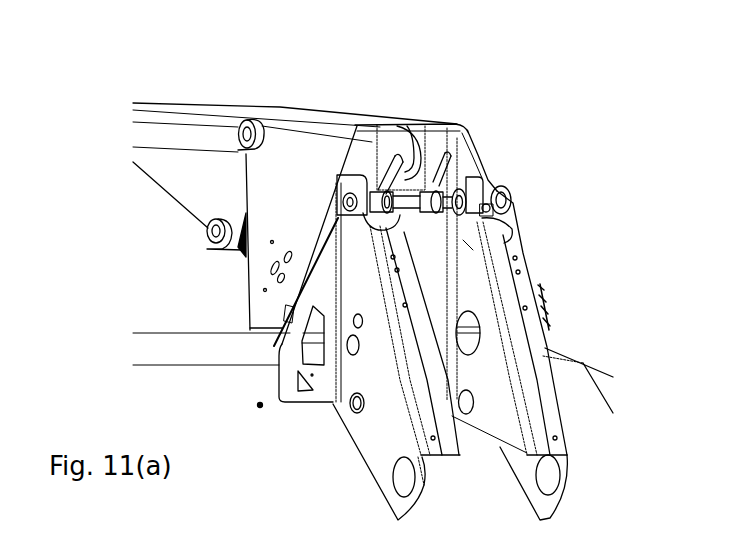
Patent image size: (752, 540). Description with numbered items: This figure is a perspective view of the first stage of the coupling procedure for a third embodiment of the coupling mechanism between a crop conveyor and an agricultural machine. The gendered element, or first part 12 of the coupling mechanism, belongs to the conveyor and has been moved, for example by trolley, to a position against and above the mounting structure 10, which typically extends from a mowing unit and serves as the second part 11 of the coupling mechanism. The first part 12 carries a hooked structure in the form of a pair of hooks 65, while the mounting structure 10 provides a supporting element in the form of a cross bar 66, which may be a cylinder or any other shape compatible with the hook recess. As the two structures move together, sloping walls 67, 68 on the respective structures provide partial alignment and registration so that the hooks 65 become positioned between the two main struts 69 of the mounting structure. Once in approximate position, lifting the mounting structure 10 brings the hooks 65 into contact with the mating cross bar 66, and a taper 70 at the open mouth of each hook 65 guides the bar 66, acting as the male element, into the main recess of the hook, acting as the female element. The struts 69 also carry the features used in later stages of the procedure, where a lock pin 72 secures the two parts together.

The mounting structure 10 is at (544, 345).
The second part of the coupling mechanism 11 is at (522, 177).
The first part of the coupling mechanism 12 is at (398, 90).
The hooked structure 65 is at (394, 157).
The cross bar 66 is at (452, 198).
The sloping wall 67 is at (323, 205).
The sloping wall 68 is at (300, 299).
The main struts 69 is at (497, 413).
The taper 70 is at (413, 172).
The lock pin 72 is at (352, 355).